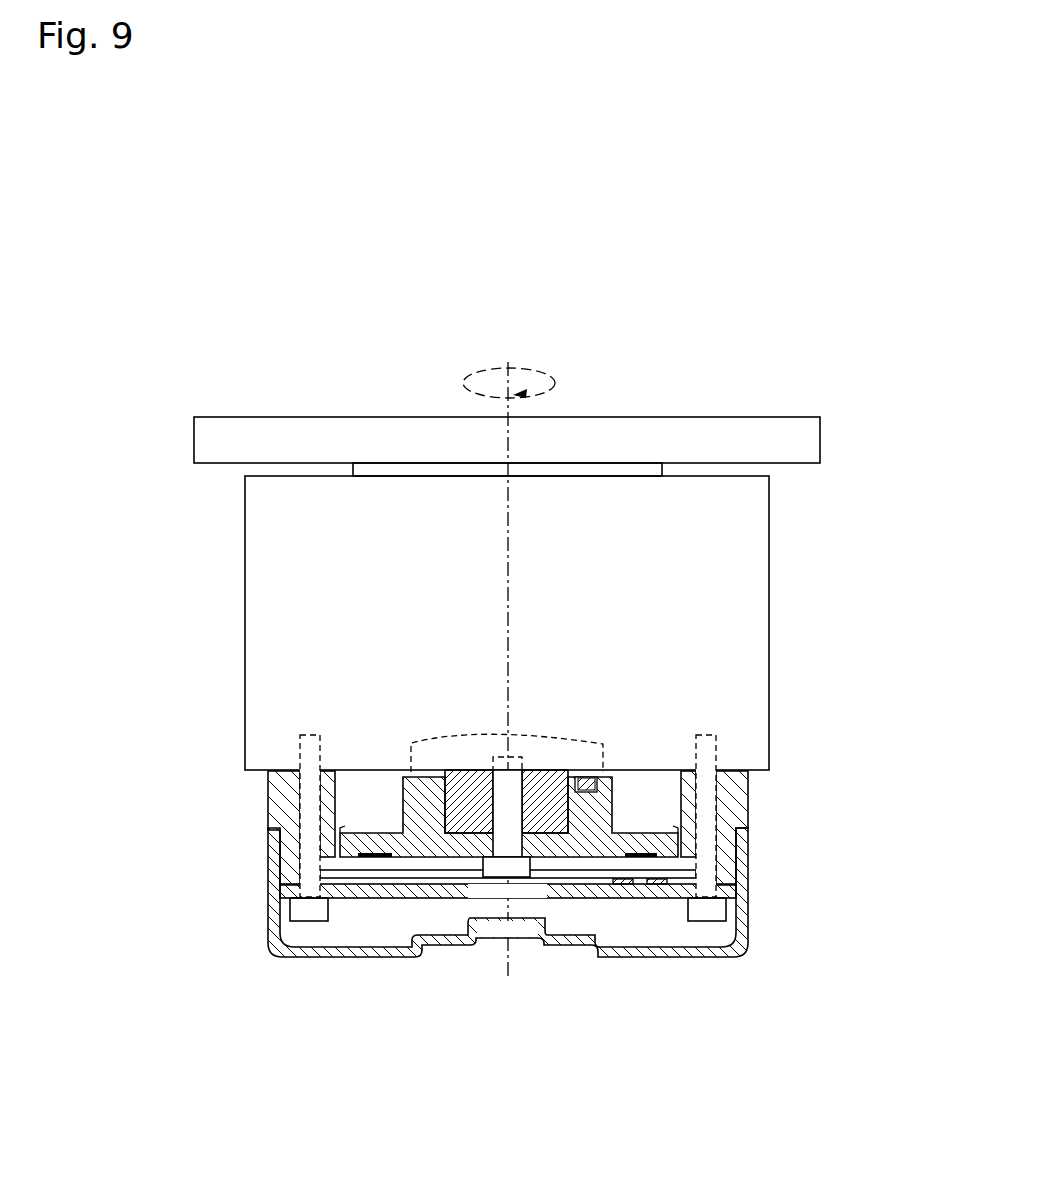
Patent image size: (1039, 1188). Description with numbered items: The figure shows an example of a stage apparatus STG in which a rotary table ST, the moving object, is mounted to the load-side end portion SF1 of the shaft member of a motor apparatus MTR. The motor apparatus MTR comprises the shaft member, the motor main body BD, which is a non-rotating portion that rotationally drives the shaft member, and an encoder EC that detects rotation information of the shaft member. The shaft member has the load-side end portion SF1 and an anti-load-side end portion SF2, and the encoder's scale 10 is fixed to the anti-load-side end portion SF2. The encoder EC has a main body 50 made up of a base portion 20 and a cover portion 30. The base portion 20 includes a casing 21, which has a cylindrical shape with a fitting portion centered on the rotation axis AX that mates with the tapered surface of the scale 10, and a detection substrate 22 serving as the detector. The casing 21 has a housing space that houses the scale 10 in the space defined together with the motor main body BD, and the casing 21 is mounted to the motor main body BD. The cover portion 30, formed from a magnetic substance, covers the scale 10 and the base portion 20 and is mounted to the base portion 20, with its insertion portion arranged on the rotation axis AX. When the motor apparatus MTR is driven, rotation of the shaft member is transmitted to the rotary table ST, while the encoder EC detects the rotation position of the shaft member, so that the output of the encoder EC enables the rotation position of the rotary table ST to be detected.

The stage apparatus STG is at (825, 389).
The rotary table ST is at (820, 437).
The anti-load-side end portion SF2 is at (662, 469).
The motor main body BD is at (245, 590).
The motor apparatus MTR is at (548, 623).
The load-side end portion SF1 is at (546, 814).
The scale 10 is at (343, 827).
The casing 21 is at (733, 787).
The base portion 20 is at (529, 864).
The cover portion 30 is at (750, 875).
The main body 50 is at (550, 864).
The detection substrate 22 is at (281, 908).
The rotation axis AX is at (514, 971).
The encoder EC is at (744, 970).